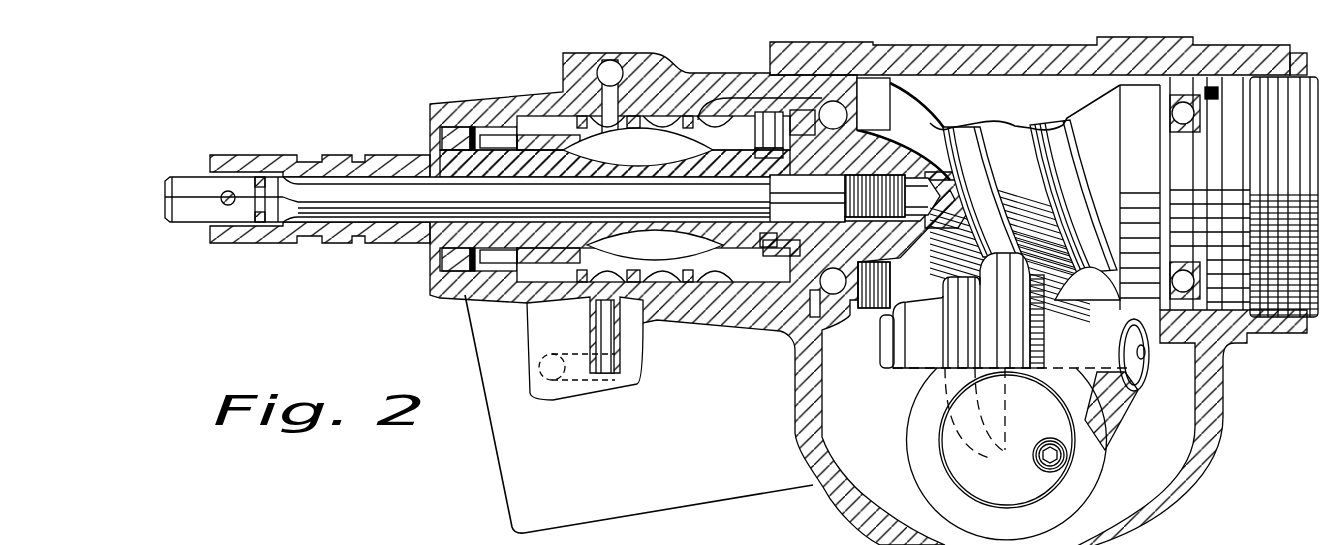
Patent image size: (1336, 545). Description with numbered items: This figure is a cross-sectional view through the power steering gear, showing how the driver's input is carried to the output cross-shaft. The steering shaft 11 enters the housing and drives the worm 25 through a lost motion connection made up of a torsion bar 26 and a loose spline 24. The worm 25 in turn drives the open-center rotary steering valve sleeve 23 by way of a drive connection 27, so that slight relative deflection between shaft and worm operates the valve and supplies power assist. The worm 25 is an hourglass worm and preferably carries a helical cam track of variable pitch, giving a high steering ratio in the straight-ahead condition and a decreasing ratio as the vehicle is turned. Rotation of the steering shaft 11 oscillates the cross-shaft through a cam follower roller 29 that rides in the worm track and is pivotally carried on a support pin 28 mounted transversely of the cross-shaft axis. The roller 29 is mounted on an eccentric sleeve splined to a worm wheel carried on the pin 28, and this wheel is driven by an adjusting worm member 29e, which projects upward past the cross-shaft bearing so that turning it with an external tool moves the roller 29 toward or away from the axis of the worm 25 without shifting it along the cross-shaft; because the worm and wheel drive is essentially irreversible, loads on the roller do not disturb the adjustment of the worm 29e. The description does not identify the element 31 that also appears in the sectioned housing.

The steering shaft 11 is at (244, 154).
The torsion bar 26 is at (360, 197).
The drive connection 27 is at (765, 137).
The worm 25 is at (1013, 124).
The open-center rotary steering valve sleeve 23 is at (650, 257).
The loose spline 24 is at (807, 258).
The cam follower roller 29 is at (1008, 312).
The gear bracket 31 is at (884, 360).
The adjusting worm member 29e is at (1038, 465).
The support pin 28 is at (1140, 372).